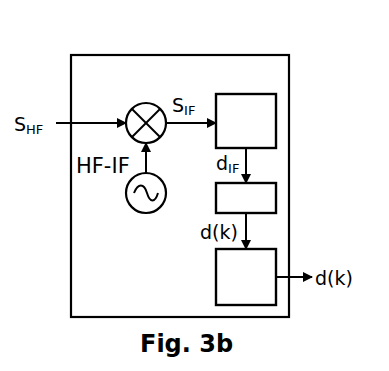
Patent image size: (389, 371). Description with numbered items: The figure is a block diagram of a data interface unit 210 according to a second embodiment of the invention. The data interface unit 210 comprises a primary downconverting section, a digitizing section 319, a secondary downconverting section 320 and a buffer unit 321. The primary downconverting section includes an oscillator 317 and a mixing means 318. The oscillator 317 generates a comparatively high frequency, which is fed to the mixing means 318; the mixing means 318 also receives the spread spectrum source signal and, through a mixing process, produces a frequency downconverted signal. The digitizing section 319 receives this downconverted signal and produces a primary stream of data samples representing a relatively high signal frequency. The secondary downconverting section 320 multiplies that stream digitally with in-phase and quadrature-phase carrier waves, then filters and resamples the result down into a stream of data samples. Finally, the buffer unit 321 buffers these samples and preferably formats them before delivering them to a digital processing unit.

The data interface unit 210 is at (290, 48).
The oscillator 317 is at (138, 212).
The mixing means 318 is at (147, 103).
The digitizing section 319 is at (233, 93).
The secondary downconverting section 320 is at (217, 203).
The buffer unit 321 is at (216, 277).